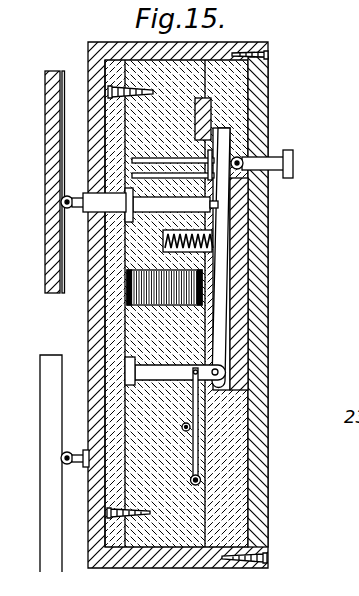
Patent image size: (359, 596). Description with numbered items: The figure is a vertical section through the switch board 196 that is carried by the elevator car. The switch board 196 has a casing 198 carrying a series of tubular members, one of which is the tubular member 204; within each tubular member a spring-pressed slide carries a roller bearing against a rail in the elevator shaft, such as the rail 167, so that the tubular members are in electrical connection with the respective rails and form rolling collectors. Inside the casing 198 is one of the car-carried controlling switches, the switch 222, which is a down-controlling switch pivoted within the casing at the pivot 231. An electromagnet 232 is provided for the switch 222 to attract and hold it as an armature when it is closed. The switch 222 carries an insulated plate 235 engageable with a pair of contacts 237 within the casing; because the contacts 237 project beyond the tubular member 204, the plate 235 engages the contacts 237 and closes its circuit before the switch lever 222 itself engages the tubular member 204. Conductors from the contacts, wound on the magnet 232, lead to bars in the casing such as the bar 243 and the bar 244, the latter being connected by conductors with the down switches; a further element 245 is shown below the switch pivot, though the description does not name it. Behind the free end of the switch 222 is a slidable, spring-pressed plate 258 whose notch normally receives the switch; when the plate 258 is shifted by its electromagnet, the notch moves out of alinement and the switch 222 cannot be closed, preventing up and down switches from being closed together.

The rail 167 is at (50, 176).
The switch board 196 is at (273, 118).
The casing 198 is at (262, 336).
The tubular member 204 is at (200, 208).
The car-carried controlling switch 222 is at (221, 262).
The pivot 231 is at (226, 373).
The electromagnet 232 is at (192, 293).
The insulated plate 235 is at (246, 173).
The pair of contacts 237 is at (214, 153).
The second bar 243 is at (191, 426).
The bar 244 is at (201, 481).
The link rod 245 is at (199, 452).
The slidable plate 258 is at (212, 107).